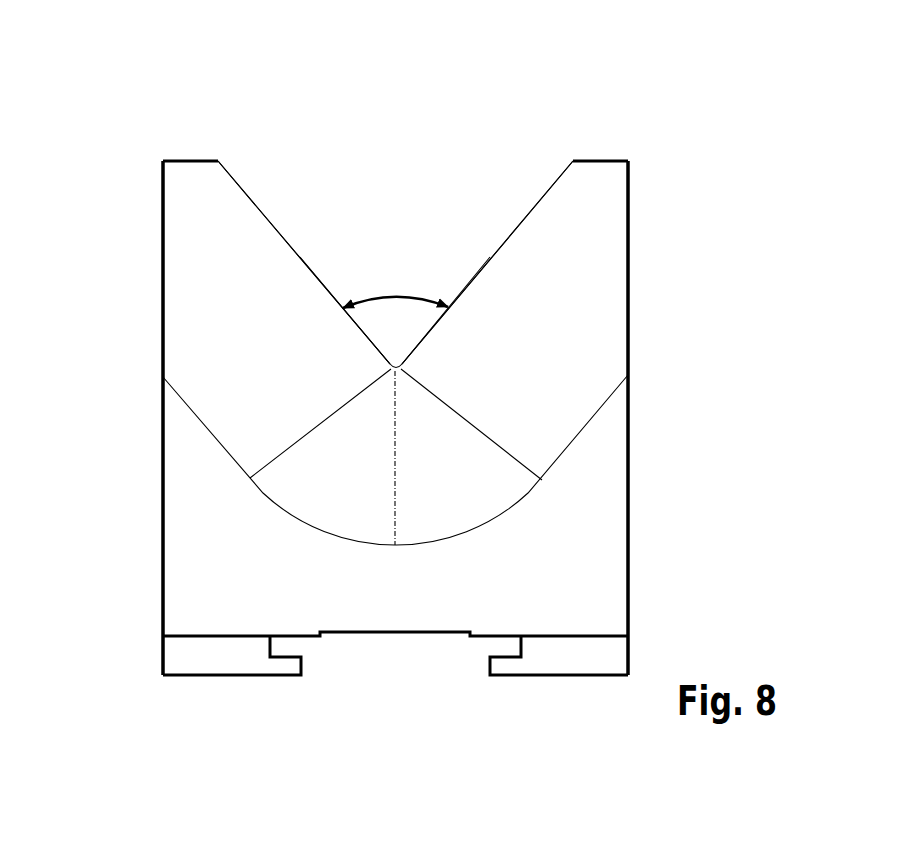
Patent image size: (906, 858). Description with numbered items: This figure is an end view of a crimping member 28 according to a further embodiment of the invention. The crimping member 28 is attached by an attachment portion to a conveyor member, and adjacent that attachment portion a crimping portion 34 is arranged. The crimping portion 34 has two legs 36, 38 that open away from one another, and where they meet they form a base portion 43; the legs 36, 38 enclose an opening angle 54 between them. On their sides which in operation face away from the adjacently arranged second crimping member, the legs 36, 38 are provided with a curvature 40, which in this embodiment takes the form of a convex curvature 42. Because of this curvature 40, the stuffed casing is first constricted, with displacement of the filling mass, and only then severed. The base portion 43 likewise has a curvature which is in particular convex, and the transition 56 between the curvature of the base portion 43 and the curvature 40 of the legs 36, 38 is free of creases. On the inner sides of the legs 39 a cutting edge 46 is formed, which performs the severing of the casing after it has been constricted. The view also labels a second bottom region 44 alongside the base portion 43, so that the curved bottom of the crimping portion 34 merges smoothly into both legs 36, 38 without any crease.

The crimping member 28 is at (168, 110).
The crimping portion 34 is at (638, 208).
The leg 36 is at (225, 220).
The leg 38 is at (585, 198).
The legs 39 is at (278, 233).
The curvature 40 is at (185, 338).
The convex curvature 42 is at (605, 338).
The base portion 43 is at (302, 496).
The second curved bottom portion 44 is at (487, 497).
The cutting edge 46 is at (312, 270).
The opening angle 54 is at (386, 297).
The transition 56 is at (525, 455).